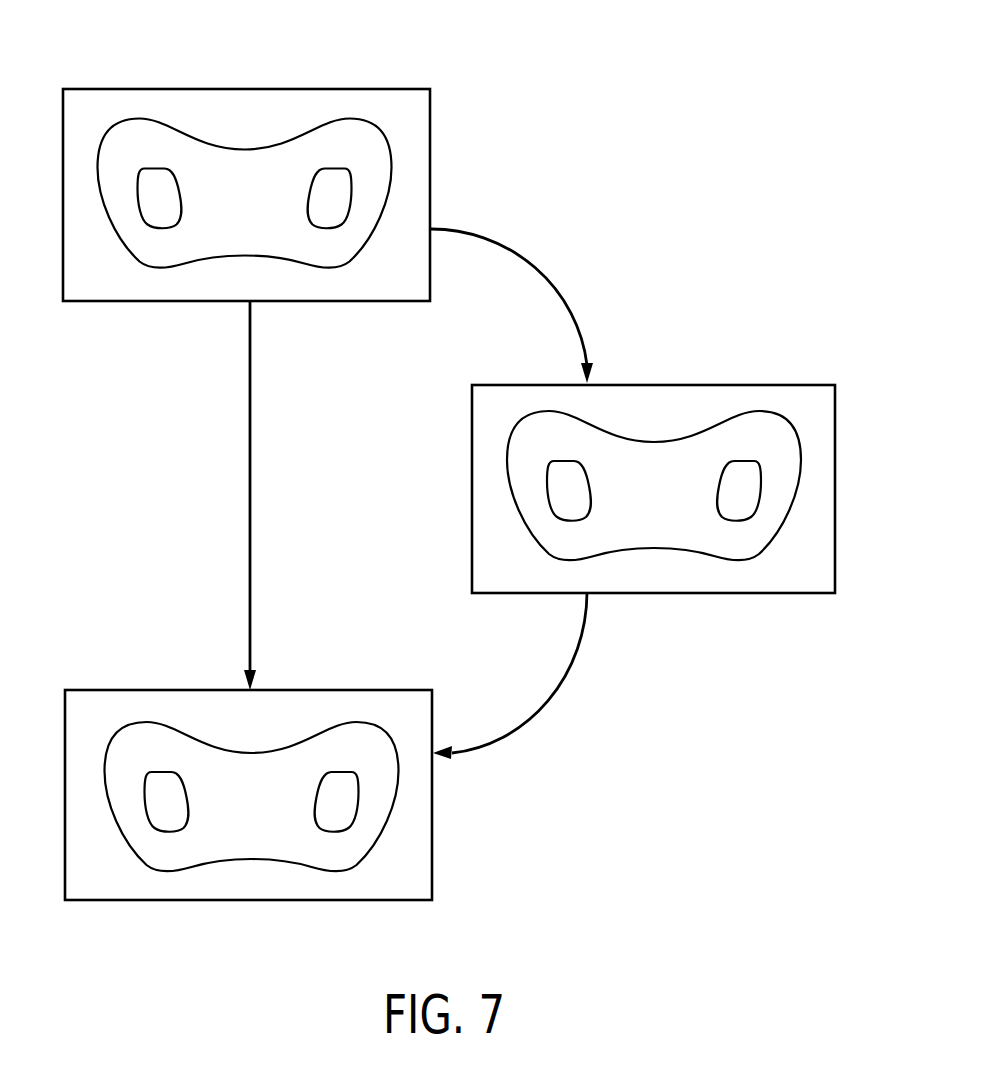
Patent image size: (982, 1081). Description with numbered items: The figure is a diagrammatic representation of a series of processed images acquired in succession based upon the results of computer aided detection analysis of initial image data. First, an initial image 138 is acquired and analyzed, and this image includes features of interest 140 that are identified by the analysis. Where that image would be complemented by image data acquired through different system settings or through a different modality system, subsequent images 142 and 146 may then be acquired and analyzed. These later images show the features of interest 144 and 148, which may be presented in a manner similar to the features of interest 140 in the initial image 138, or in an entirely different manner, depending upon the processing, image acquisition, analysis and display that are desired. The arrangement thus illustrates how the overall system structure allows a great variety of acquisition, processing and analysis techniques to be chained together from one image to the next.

The initial image 138 is at (380, 89).
The features of interest 140 is at (385, 145).
The subsequent image 142 is at (787, 383).
The features of interest 144 is at (792, 440).
The subsequent image 146 is at (382, 689).
The features of interest 148 is at (173, 732).